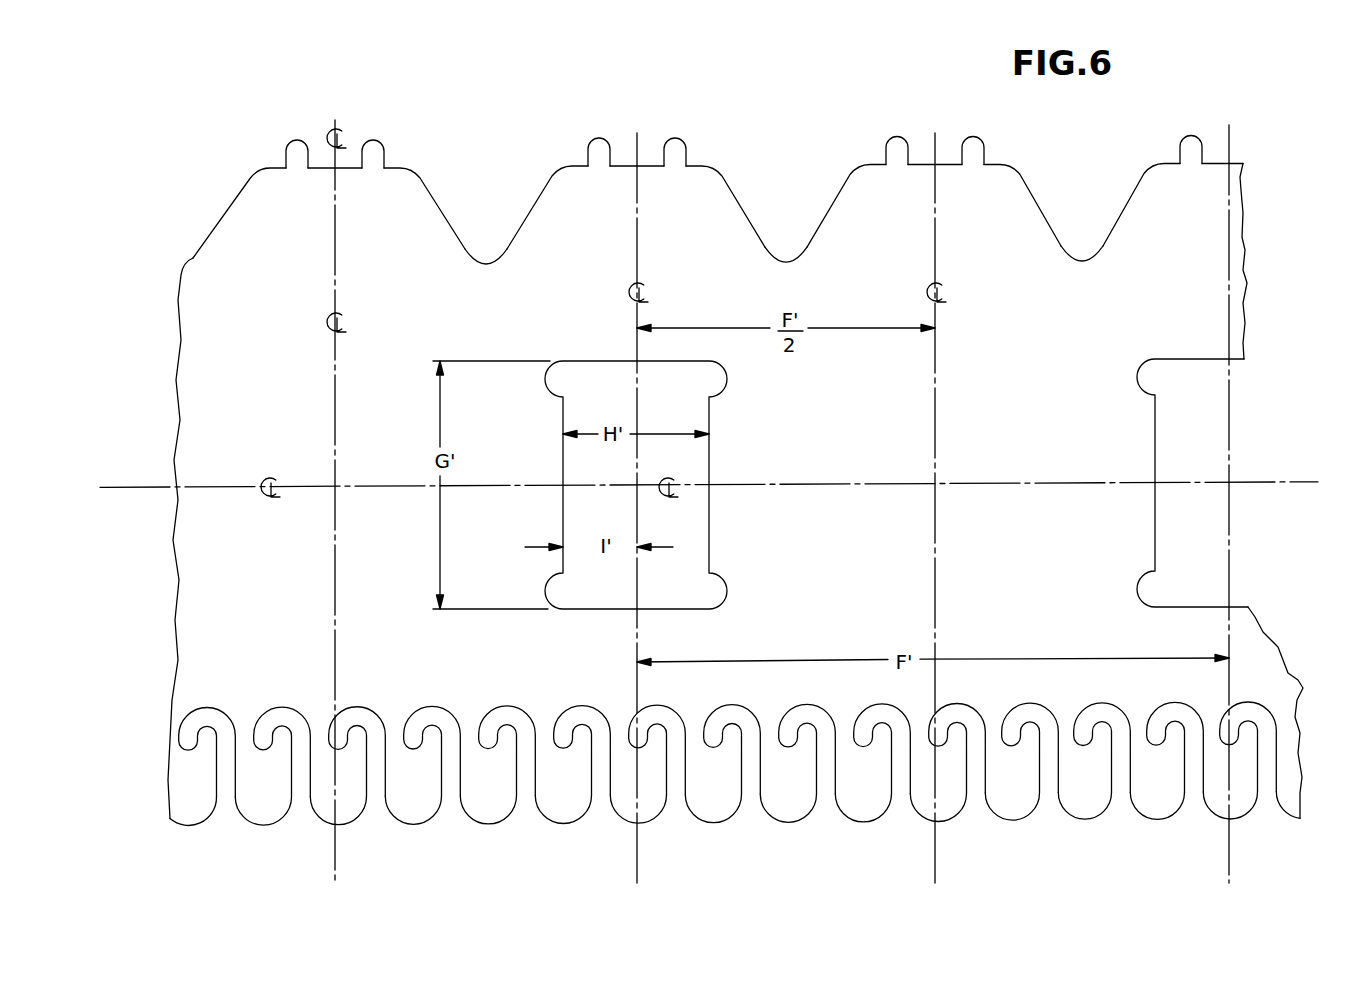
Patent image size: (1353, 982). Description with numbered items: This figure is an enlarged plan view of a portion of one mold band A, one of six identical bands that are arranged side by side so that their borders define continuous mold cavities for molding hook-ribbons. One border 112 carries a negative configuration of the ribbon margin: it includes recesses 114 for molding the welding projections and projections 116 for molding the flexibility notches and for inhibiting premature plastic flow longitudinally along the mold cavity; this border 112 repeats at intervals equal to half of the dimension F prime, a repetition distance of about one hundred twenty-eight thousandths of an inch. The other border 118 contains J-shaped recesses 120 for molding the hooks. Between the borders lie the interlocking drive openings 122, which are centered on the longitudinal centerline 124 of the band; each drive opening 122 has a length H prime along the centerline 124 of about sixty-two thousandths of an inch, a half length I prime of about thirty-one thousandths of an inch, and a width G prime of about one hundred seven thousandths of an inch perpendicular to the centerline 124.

The mold band A is at (176, 151).
The border 112 is at (185, 188).
The recesses 114 is at (522, 229).
The projections 116 is at (377, 140).
The other border 118 is at (694, 741).
The J-shaped recesses 120 is at (487, 708).
The interlocking drive openings 122 is at (714, 554).
The longitudinal centerline 124 is at (1262, 474).